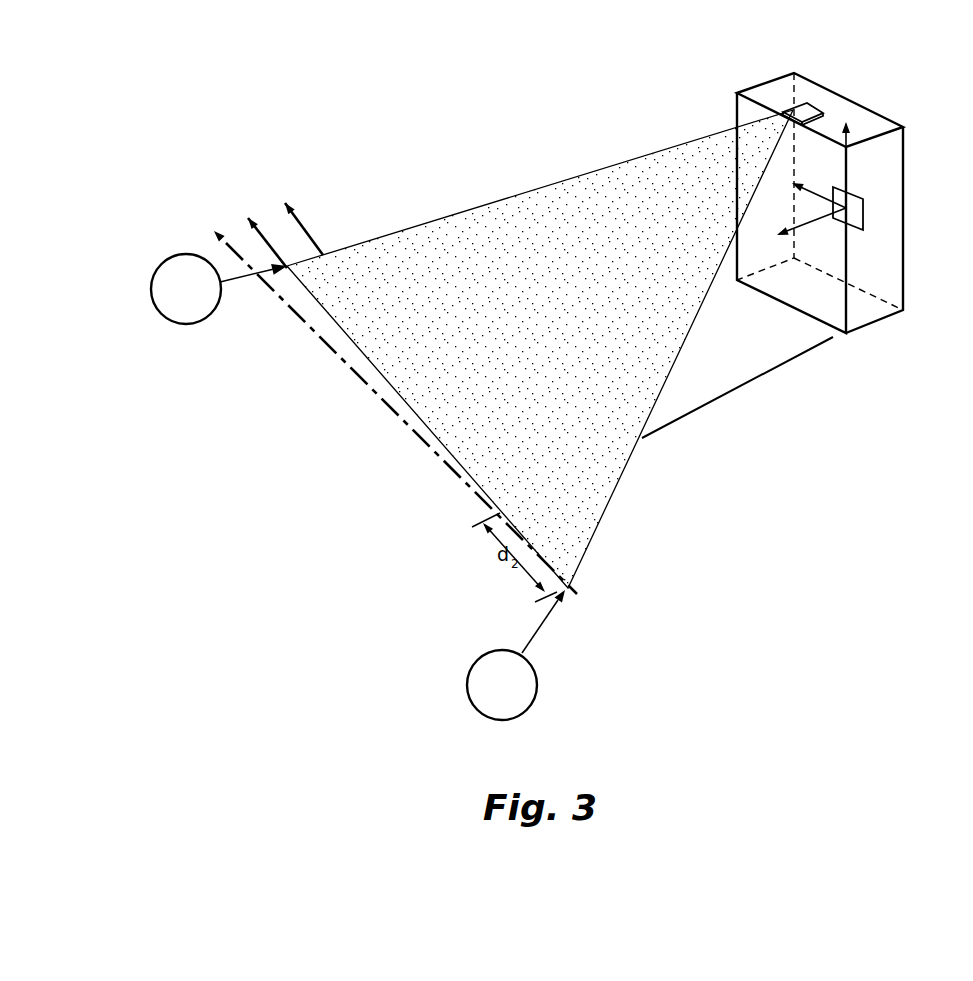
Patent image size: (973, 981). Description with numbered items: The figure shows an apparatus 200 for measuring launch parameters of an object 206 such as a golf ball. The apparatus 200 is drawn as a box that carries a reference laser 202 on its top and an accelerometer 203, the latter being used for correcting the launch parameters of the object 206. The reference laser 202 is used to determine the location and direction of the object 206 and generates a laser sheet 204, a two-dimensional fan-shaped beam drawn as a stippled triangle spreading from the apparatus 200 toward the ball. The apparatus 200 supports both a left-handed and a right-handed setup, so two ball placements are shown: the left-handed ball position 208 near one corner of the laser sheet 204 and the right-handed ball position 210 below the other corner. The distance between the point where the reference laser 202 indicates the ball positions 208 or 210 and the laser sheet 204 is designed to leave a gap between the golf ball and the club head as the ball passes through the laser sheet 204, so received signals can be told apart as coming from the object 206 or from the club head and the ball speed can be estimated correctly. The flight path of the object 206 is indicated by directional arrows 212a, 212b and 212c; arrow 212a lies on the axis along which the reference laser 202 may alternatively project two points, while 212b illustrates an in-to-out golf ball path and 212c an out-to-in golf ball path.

The apparatus 200 is at (883, 122).
The reference laser 202 is at (808, 105).
The accelerometer 203 is at (870, 222).
The laser sheet 204 is at (590, 171).
The object 206 is at (164, 307).
The left-handed ball position 208 is at (142, 289).
The right-handed ball position 210 is at (550, 678).
The directional arrow 212a is at (246, 224).
The in-to-out golf ball path 212b is at (282, 207).
The out-to-in golf ball path 212c is at (214, 236).